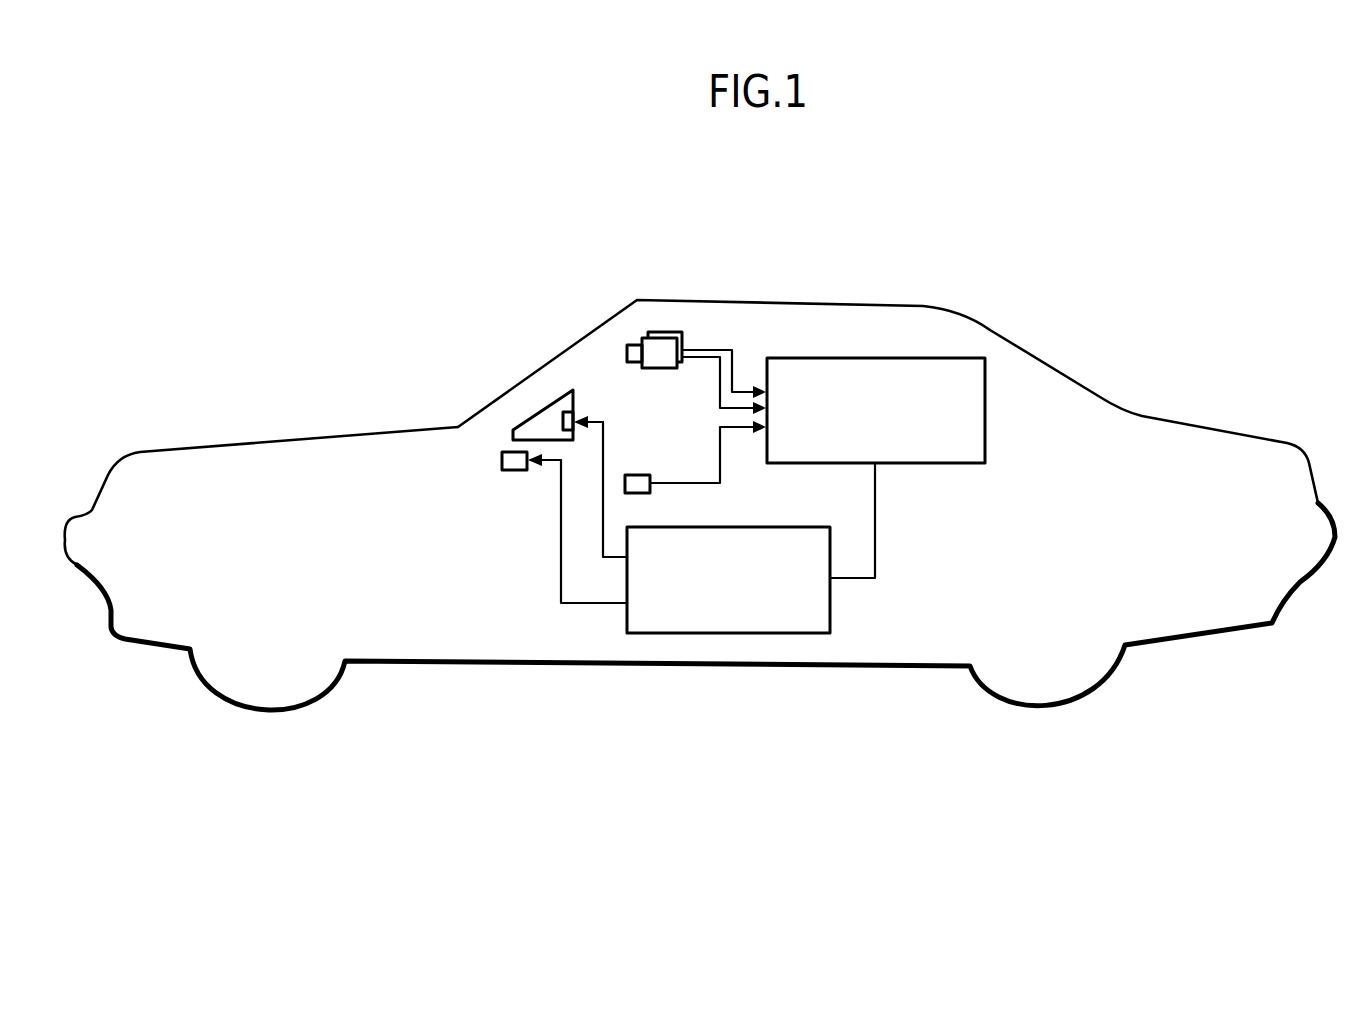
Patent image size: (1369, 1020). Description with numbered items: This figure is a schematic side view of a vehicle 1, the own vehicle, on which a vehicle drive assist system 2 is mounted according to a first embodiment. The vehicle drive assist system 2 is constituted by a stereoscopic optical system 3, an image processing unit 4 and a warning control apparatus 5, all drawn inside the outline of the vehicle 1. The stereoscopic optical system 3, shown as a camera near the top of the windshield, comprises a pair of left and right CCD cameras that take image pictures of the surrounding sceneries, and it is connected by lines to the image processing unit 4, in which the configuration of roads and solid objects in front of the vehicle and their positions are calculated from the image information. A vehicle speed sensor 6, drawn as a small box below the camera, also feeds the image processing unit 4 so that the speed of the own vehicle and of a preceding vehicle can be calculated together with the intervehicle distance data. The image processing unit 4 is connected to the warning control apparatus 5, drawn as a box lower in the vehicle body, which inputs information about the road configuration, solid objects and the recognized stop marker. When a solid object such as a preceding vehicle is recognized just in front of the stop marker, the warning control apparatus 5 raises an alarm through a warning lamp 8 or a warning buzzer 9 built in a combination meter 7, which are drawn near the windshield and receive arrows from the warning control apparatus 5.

The vehicle 1 is at (800, 253).
The vehicle drive assist system 2 is at (1022, 374).
The stereoscopic optical system 3 is at (667, 332).
The image processing unit 4 is at (938, 464).
The warning control apparatus 5 is at (769, 526).
The vehicle speed sensor 6 is at (640, 475).
The combination meter 7 is at (553, 400).
The warning lamp 8 is at (575, 417).
The warning buzzer 9 is at (512, 472).